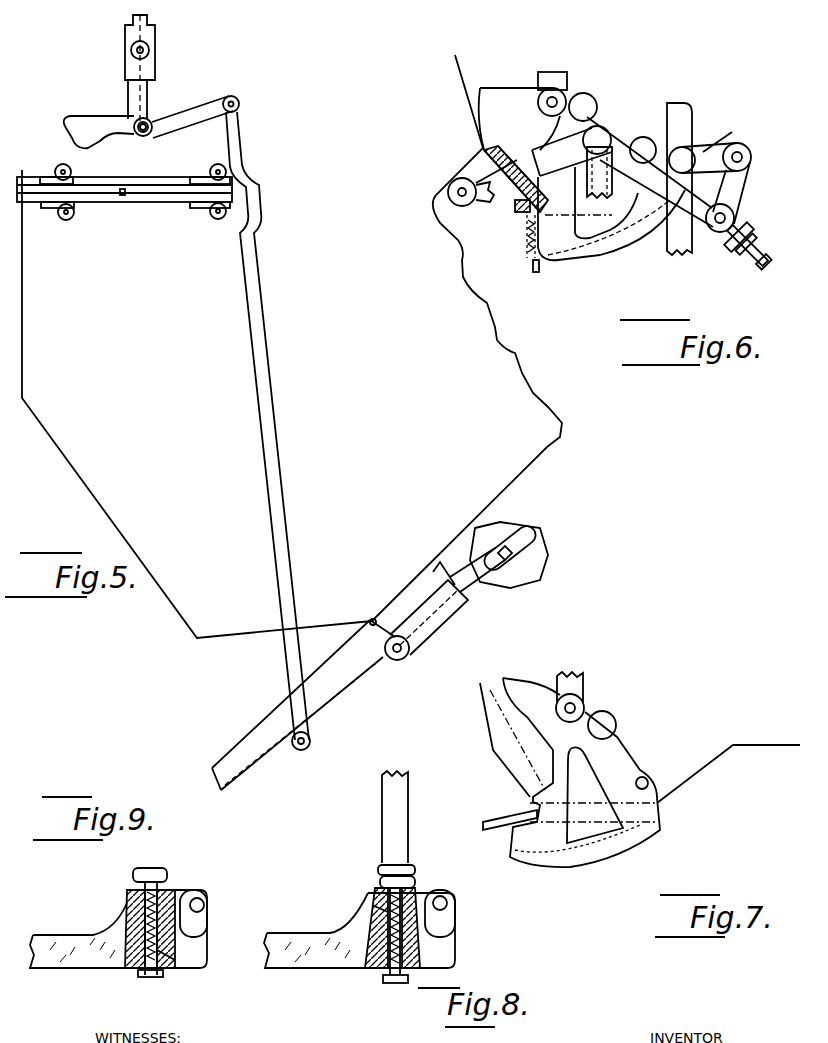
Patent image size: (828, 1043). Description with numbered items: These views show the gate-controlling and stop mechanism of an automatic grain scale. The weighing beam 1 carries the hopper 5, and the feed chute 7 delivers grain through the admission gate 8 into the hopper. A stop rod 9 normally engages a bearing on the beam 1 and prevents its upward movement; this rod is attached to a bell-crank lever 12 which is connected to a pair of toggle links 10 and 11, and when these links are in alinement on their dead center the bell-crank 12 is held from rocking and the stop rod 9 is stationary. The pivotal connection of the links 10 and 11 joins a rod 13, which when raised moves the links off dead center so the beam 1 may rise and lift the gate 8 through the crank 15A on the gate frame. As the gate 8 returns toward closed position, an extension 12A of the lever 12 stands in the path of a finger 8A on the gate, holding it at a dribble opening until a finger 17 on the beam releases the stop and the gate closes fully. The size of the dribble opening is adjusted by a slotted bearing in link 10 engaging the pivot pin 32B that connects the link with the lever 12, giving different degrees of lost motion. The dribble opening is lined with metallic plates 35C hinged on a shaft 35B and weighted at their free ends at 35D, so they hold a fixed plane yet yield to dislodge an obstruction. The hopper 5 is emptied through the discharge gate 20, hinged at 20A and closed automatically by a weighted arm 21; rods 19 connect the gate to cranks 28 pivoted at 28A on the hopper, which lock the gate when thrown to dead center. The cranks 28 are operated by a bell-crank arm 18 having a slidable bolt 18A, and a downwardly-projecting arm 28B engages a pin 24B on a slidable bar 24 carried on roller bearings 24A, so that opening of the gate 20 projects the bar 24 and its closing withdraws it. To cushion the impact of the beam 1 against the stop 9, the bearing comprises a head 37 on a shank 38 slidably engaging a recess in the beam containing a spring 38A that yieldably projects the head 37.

In FIG. 9, the weighing beam 1 is at (92, 962).
In FIG. 8, the weighing beam 1 is at (312, 965).
In FIG. 5, the hopper 5 is at (181, 593).
In FIG. 6, the feed chute 7 is at (478, 128).
In FIG. 7, the feed chute 7 is at (500, 732).
In FIG. 6, the admission gate 8 is at (600, 243).
In FIG. 7, the admission gate 8 is at (602, 852).
In FIG. 6, the finger 8A is at (643, 137).
In FIG. 7, the finger 8A is at (650, 778).
In FIG. 6, the stop rod 9 is at (665, 248).
In FIG. 8, the stop rod 9 is at (395, 828).
In FIG. 6, the toggle link 10 is at (705, 230).
In FIG. 6, the toggle link 11 is at (485, 200).
In FIG. 6, the bell-crank lever 12 is at (742, 180).
In FIG. 6, the extension 12A is at (606, 156).
In FIG. 6, the rod 13 is at (600, 172).
In FIG. 6, the crank 15A is at (570, 94).
In FIG. 7, the crank 15A is at (588, 712).
In FIG. 9, the finger 17 is at (208, 900).
In FIG. 8, the finger 17 is at (447, 903).
In FIG. 5, the bell-crank arm 18 is at (133, 22).
In FIG. 5, the slidable bolt 18A is at (150, 50).
In FIG. 5, the rod 19 is at (285, 556).
In FIG. 5, the discharge gate 20 is at (337, 668).
In FIG. 5, the hinge 20A is at (400, 661).
In FIG. 5, the weighted arm 21 is at (536, 567).
In FIG. 5, the slidable bar 24 is at (100, 205).
In FIG. 5, the roller bearings 24A is at (218, 220).
In FIG. 5, the pin 24B is at (123, 196).
In FIG. 5, the crank 28 is at (198, 121).
In FIG. 5, the pivot 28A is at (152, 118).
In FIG. 5, the downwardly-projecting arm 28B is at (118, 136).
In FIG. 6, the pivot pin 32B is at (740, 218).
In FIG. 6, the shaft 35B is at (510, 209).
In FIG. 6, the metallic plates 35C is at (527, 240).
In FIG. 7, the metallic plates 35C is at (520, 815).
In FIG. 6, the weight 35D is at (533, 268).
In FIG. 9, the head 37 is at (167, 880).
In FIG. 8, the head 37 is at (415, 878).
In FIG. 9, the shank 38 is at (128, 915).
In FIG. 8, the shank 38 is at (378, 968).
In FIG. 9, the spring 38A is at (170, 948).
In FIG. 8, the spring 38A is at (372, 912).